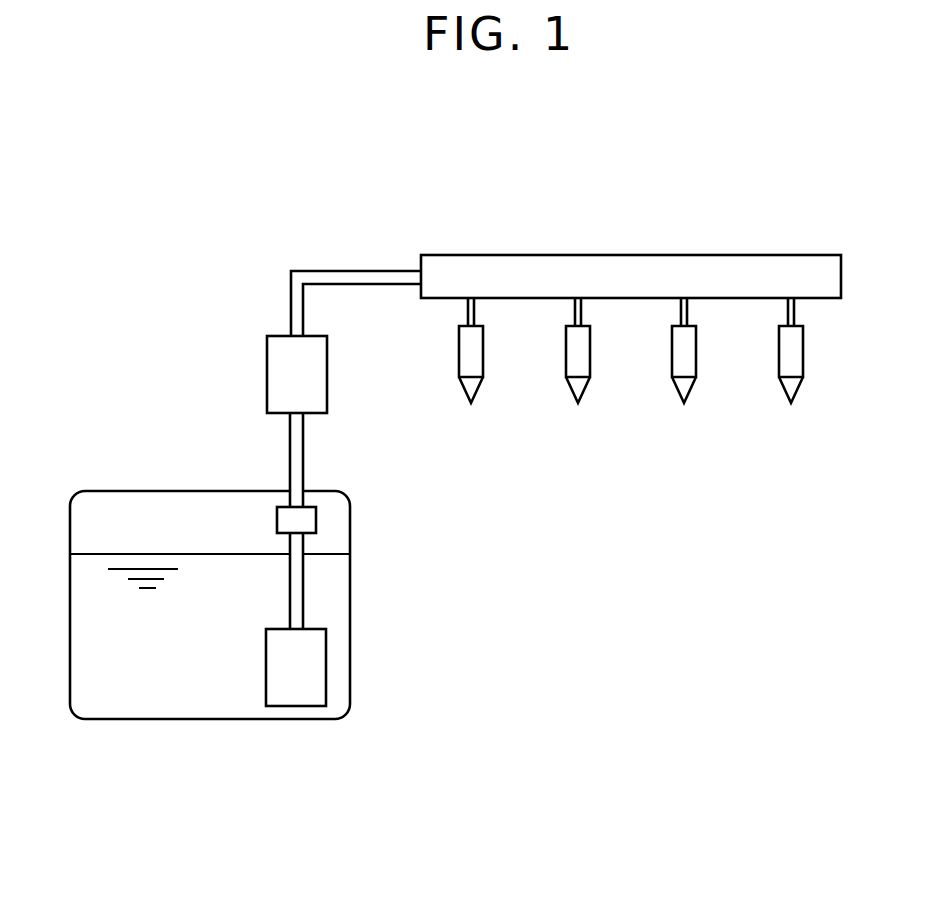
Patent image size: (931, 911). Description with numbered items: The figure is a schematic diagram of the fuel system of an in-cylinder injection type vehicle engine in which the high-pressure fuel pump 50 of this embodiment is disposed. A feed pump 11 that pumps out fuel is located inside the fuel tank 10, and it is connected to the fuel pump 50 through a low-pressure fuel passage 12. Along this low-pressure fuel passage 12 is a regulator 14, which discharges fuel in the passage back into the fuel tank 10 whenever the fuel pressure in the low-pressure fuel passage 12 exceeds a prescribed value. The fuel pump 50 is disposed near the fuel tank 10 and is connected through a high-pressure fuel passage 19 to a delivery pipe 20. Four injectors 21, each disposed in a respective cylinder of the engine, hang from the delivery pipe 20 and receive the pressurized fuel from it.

The fuel tank 10 is at (150, 721).
The feed pump 11 is at (326, 683).
The low-pressure fuel passage 12 is at (290, 448).
The regulator 14 is at (316, 517).
The high-pressure fuel passage 19 is at (352, 270).
The delivery pipe 20 is at (631, 254).
The injectors 21 is at (462, 390).
The fuel pump 50 is at (267, 371).